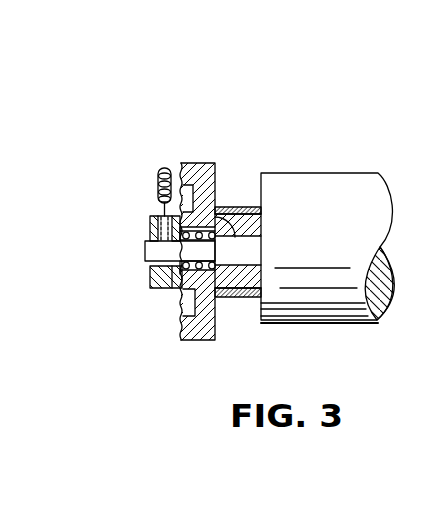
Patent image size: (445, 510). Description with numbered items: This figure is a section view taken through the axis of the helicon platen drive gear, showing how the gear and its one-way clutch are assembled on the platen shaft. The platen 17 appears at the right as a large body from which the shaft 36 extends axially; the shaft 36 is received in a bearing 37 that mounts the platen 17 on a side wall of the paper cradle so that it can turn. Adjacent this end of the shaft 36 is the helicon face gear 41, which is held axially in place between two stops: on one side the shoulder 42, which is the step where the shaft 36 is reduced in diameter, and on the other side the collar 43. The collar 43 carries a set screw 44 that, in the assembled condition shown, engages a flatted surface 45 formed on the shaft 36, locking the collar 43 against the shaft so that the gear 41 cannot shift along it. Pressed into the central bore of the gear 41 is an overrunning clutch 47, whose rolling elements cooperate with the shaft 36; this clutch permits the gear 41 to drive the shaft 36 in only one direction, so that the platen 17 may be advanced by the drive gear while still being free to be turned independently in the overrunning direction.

The platen 17 is at (330, 216).
The shaft 36 is at (259, 242).
The bearing 37 is at (236, 298).
The helicon face gear 41 is at (206, 163).
The shoulder 42 is at (236, 207).
The collar 43 is at (150, 223).
The set screw 44 is at (163, 167).
The flatted surface 45 is at (150, 243).
The overrunning clutch 47 is at (186, 258).